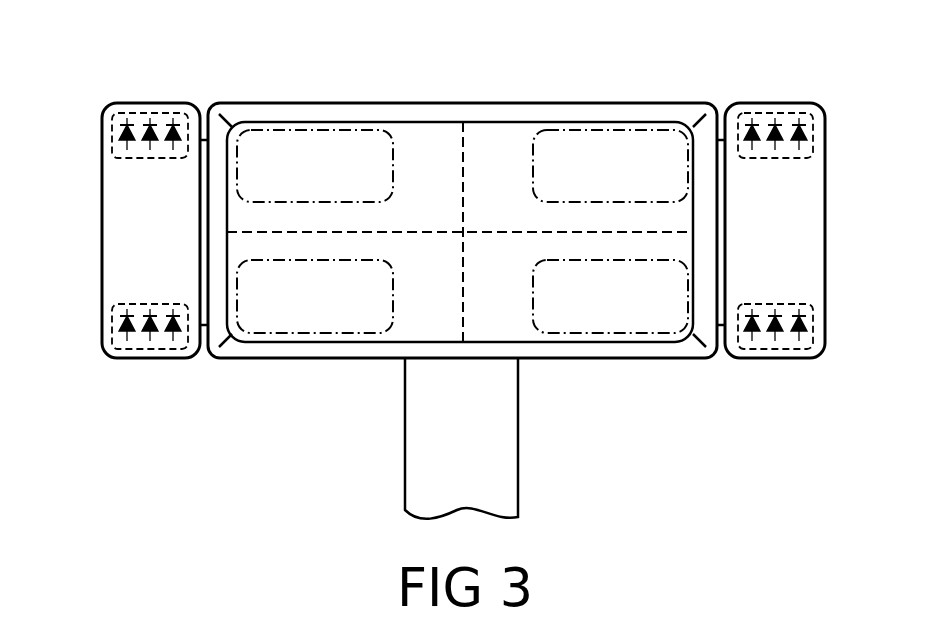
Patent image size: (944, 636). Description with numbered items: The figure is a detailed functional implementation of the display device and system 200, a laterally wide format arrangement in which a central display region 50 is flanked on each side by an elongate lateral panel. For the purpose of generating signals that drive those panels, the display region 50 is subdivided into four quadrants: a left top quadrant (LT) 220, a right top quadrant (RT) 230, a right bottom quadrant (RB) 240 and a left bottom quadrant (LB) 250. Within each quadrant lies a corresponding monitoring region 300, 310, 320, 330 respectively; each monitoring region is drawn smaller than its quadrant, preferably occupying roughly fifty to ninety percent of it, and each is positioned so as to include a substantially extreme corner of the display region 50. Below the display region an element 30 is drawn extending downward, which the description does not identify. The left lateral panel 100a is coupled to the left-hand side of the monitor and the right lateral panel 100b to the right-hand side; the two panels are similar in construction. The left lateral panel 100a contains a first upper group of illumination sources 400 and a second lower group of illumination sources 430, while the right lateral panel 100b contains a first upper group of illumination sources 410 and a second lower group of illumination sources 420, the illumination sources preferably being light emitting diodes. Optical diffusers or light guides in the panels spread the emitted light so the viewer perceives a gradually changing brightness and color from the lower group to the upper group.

The display device and system 200 is at (292, 460).
The display region 50 is at (717, 58).
The left top quadrant (LT) 220 is at (428, 150).
The right top quadrant (RT) 230 is at (497, 148).
The left bottom quadrant (LB) 250 is at (413, 307).
The right bottom quadrant (RB) 240 is at (512, 307).
The monitoring region 300 is at (303, 148).
The monitoring region 310 is at (615, 147).
The monitoring region 320 is at (648, 320).
The monitoring region 330 is at (272, 320).
The stand 30 is at (430, 470).
The left lateral panel 100a is at (108, 203).
The right lateral panel 100b is at (815, 208).
The first upper group of illumination sources 400 is at (115, 118).
The second lower group of illumination sources 430 is at (115, 310).
The first upper group of illumination sources 410 is at (810, 120).
The second lower group of illumination sources 420 is at (810, 312).